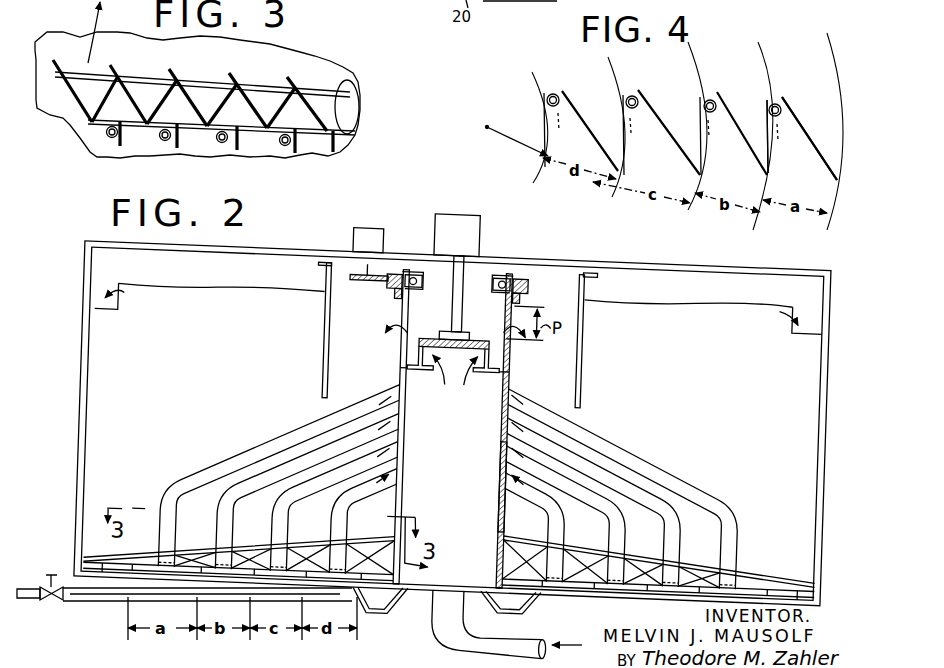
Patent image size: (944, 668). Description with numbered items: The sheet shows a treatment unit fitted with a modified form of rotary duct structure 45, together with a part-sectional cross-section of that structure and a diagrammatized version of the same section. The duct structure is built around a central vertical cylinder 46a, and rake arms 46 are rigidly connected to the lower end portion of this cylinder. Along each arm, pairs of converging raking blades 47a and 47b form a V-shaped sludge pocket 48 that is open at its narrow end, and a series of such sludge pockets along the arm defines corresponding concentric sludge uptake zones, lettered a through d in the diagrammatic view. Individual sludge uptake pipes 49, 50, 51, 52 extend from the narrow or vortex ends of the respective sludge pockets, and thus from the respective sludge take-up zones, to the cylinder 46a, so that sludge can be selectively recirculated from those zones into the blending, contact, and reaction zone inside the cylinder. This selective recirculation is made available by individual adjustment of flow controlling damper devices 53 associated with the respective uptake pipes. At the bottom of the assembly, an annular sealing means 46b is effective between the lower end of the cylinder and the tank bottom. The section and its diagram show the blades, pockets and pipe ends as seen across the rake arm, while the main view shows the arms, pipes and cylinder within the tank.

In FIG. 2, the rotary duct structure 45 is at (509, 380).
In FIG. 2, the rake arms 46 is at (193, 559).
In FIG. 2, the central vertical cylinder 46a is at (498, 480).
In FIG. 2, the annular sealing means 46b is at (492, 580).
In FIG. 3, the raking blade 47a is at (55, 118).
In FIG. 4, the raking blade 47a is at (835, 115).
In FIG. 3, the raking blade 47b is at (134, 133).
In FIG. 4, the raking blade 47b is at (767, 167).
In FIG. 4, the sludge pocket 48 is at (582, 157).
In FIG. 3, the sludge uptake pipe 49 is at (104, 137).
In FIG. 4, the sludge uptake pipe 49 is at (775, 103).
In FIG. 2, the sludge uptake pipe 49 is at (271, 447).
In FIG. 3, the sludge uptake pipe 50 is at (166, 142).
In FIG. 4, the sludge uptake pipe 50 is at (710, 99).
In FIG. 2, the sludge uptake pipe 50 is at (235, 532).
In FIG. 3, the sludge uptake pipe 51 is at (226, 144).
In FIG. 4, the sludge uptake pipe 51 is at (633, 95).
In FIG. 2, the sludge uptake pipe 51 is at (290, 537).
In FIG. 3, the sludge uptake pipe 52 is at (300, 147).
In FIG. 4, the sludge uptake pipe 52 is at (553, 94).
In FIG. 2, the sludge uptake pipe 52 is at (350, 522).
In FIG. 2, the flow controlling damper devices 53 is at (380, 427).